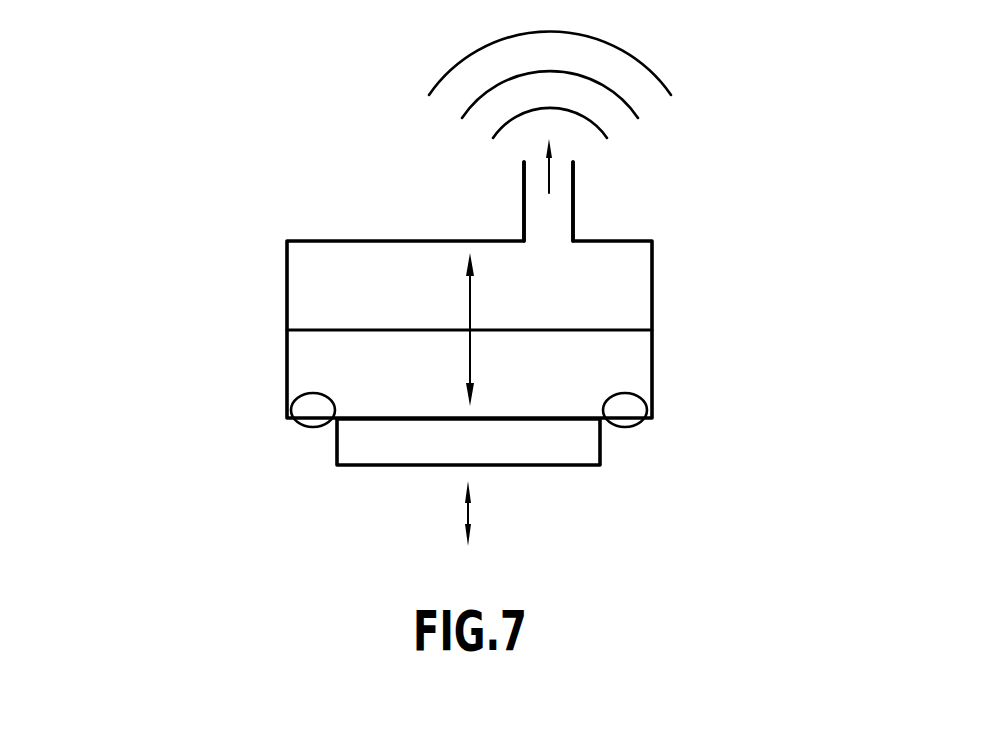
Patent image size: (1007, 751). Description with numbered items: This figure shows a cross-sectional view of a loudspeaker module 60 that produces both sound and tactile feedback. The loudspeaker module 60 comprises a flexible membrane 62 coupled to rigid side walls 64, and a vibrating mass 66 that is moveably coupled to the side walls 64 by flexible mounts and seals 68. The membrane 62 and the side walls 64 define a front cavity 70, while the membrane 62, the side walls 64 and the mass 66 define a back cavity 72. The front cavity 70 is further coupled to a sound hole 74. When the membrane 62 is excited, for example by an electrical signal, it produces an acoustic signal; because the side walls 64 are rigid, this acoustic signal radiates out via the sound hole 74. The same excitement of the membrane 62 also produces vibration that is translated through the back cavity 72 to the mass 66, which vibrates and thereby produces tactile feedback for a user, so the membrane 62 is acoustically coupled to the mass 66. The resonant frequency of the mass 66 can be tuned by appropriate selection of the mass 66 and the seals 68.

The loudspeaker module 60 is at (136, 169).
The flexible membrane 62 is at (327, 328).
The side walls 64 is at (347, 238).
The vibrating mass 66 is at (577, 468).
The flexible mounts and seals 68 is at (305, 415).
The front cavity 70 is at (632, 280).
The back cavity 72 is at (632, 370).
The sound hole 74 is at (565, 208).